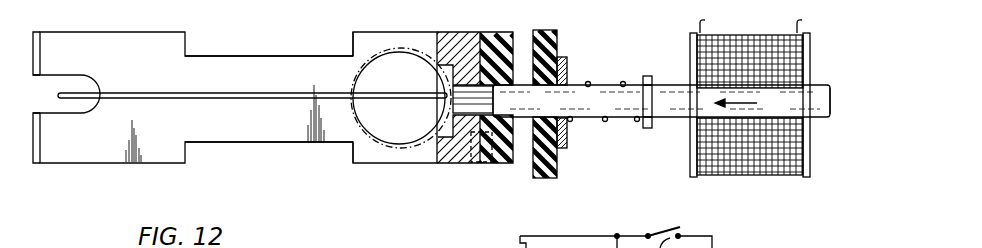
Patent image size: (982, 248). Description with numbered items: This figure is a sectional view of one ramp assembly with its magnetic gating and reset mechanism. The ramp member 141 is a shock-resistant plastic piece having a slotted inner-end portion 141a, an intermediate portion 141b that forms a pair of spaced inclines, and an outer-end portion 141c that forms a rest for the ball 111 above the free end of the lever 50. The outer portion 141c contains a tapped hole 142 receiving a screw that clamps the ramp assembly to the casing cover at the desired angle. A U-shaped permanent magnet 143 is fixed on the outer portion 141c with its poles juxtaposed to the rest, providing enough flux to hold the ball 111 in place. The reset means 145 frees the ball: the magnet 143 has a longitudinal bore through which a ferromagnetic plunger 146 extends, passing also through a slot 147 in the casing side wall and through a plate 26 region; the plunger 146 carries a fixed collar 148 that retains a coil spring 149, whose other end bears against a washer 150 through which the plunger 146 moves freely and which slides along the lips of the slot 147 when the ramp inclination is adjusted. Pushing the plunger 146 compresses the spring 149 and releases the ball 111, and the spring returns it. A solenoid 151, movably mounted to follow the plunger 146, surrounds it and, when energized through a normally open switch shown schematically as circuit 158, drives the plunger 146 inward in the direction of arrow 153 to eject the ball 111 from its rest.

The mounting plate 26 is at (552, 36).
The lever 50 is at (163, 94).
The ball 111 is at (377, 43).
The ramp member 141 is at (247, 163).
The inner-end portion 141a is at (85, 163).
The intermediate portion 141b is at (232, 32).
The outer-end portion 141c is at (430, 163).
The tapped hole 142 is at (470, 167).
The magnet 143 is at (478, 20).
The reset means 145 is at (682, 55).
The plunger 146 is at (832, 90).
The slot 147 is at (70, 82).
The collar 148 is at (648, 130).
The coil spring 149 is at (602, 58).
The washer 150 is at (563, 140).
The solenoid 151 is at (763, 165).
The arrow 153 is at (745, 110).
The switch circuit 158 is at (577, 237).